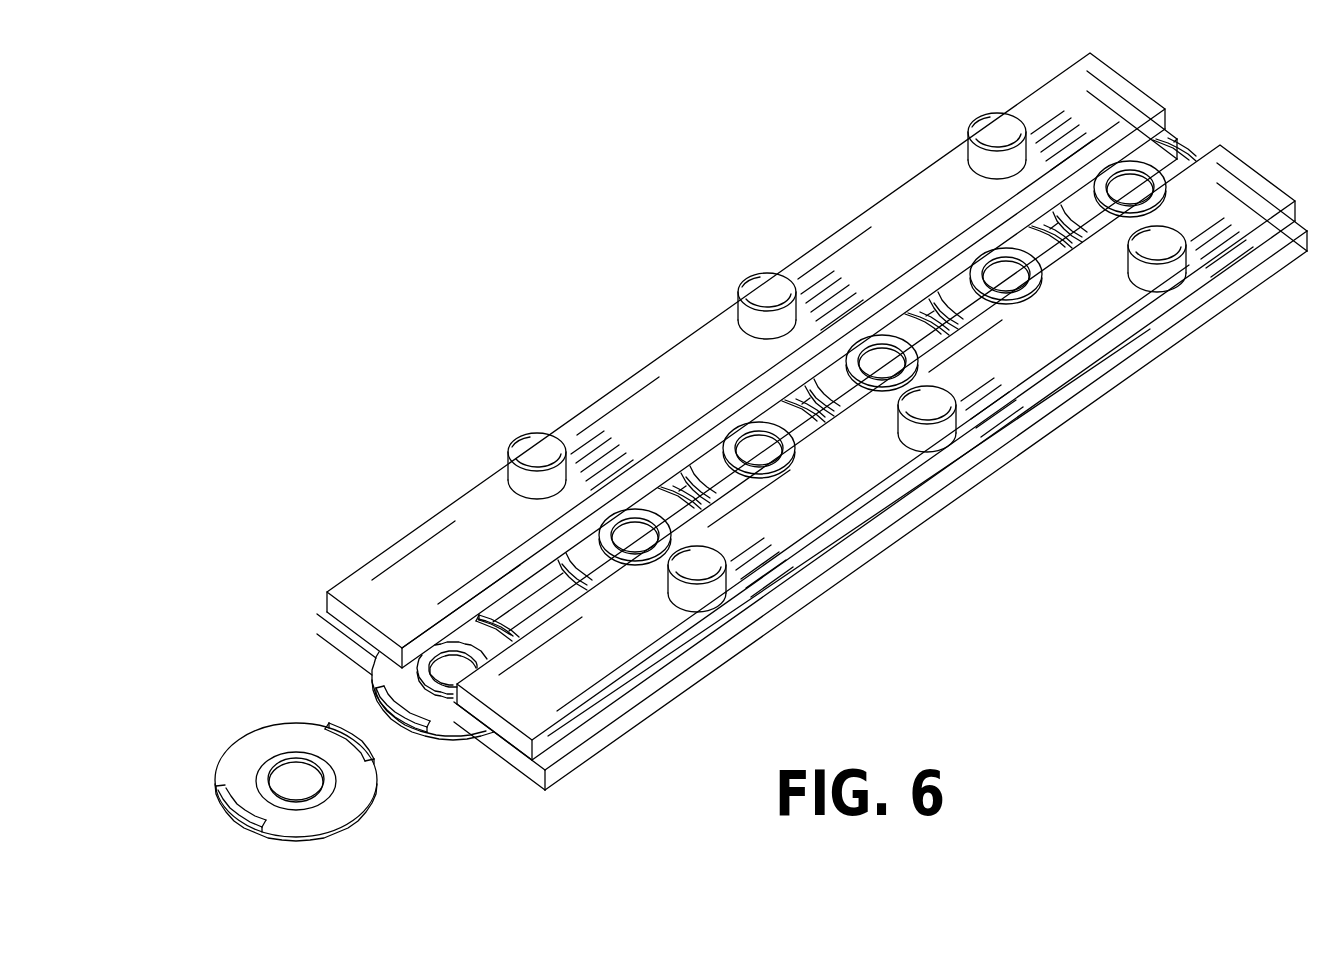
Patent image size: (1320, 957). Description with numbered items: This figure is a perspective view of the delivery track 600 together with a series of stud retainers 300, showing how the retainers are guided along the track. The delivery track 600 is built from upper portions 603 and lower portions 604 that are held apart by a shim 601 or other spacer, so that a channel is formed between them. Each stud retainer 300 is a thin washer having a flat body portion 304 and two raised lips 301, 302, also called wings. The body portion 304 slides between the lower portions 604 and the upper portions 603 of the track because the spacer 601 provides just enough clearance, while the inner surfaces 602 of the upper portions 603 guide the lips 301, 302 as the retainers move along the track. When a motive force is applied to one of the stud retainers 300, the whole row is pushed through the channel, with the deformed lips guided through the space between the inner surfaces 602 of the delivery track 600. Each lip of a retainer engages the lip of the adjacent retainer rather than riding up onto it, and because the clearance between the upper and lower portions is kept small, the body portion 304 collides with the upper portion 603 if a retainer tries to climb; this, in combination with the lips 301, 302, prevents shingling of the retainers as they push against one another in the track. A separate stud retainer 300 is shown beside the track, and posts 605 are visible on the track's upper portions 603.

The delivery track 600 is at (585, 272).
The shim 601 is at (327, 593).
The inner surfaces 602 is at (447, 625).
The upper portions 603 is at (918, 240).
The lower portions 604 is at (335, 638).
The post 605 is at (930, 405).
The stud retainer 300 is at (1172, 162).
The lip 301 is at (567, 573).
The lip 302 is at (707, 517).
The body portion 304 is at (401, 675).